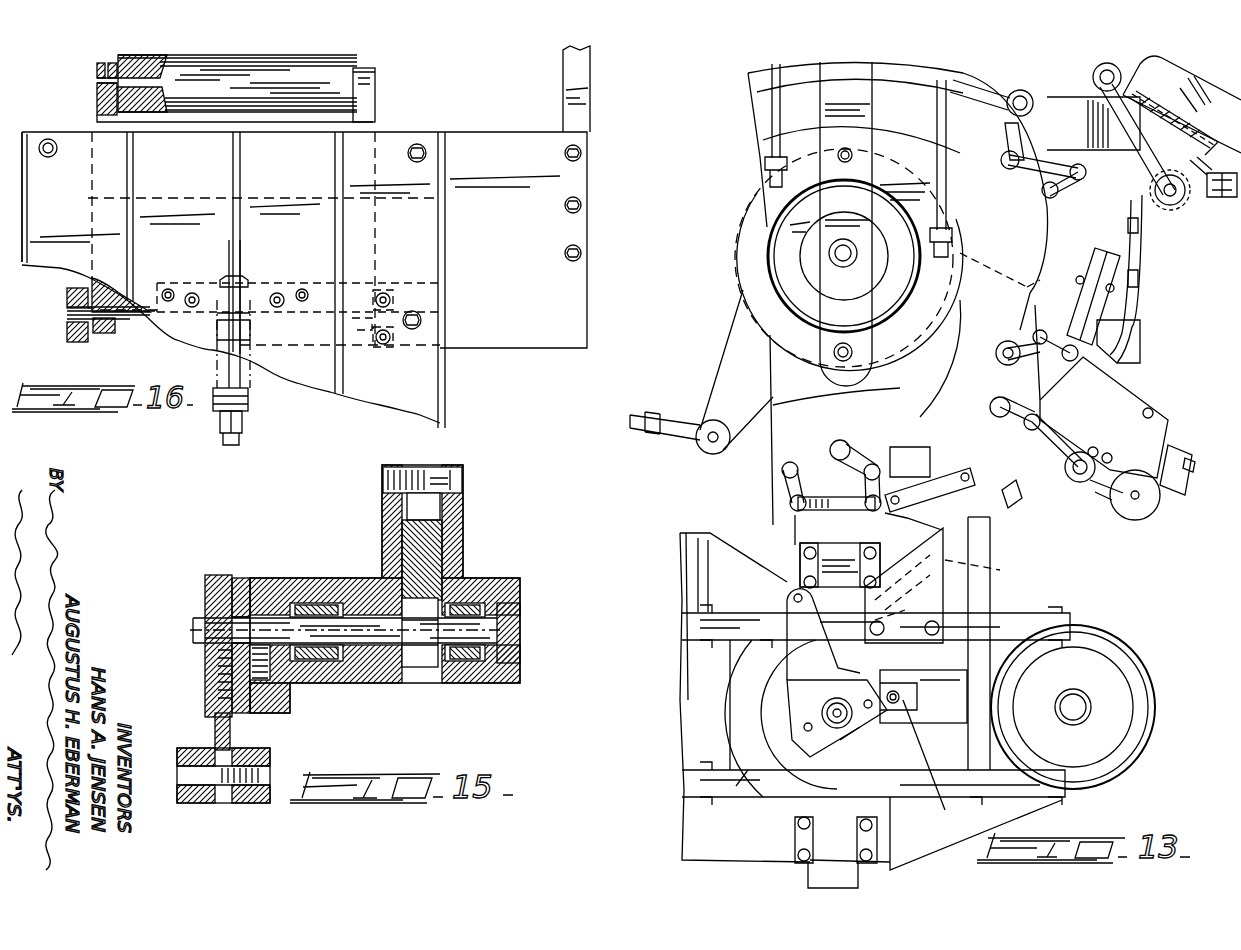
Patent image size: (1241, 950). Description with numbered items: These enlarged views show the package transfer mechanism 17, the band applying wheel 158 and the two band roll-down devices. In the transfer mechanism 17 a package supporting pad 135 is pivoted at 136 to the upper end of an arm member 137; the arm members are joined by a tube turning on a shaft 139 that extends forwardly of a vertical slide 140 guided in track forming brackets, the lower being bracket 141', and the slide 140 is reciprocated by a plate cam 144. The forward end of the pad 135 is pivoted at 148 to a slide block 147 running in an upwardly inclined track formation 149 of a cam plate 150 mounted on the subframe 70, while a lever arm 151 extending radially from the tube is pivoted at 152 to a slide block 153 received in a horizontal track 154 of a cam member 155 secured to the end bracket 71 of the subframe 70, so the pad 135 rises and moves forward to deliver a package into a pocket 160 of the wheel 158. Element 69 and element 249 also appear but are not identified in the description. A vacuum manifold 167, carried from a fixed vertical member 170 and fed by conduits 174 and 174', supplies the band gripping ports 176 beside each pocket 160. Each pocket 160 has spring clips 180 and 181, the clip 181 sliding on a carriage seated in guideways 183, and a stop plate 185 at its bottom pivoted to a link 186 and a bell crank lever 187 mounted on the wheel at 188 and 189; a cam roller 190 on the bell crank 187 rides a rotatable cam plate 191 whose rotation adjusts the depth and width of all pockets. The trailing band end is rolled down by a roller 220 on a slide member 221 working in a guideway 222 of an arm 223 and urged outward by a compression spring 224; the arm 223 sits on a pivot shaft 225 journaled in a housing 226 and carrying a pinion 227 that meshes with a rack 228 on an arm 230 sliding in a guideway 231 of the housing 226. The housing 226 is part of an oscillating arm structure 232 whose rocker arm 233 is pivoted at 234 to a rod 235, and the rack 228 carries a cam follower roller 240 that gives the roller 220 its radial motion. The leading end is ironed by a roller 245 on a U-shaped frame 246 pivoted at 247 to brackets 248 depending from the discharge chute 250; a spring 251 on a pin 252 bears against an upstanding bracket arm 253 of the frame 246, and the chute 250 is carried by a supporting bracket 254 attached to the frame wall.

In FIG. 13, the transfer mechanism 17 is at (674, 739).
In FIG. 13, the pulley hub 69 is at (1078, 700).
In FIG. 13, the subframe 70 is at (736, 786).
In FIG. 13, the end bracket 71 is at (1000, 745).
In FIG. 13, the package supporting pad 135 is at (840, 545).
In FIG. 13, the pivot 136 is at (790, 596).
In FIG. 13, the arm member 137 is at (750, 652).
In FIG. 13, the shaft 139 is at (830, 712).
In FIG. 13, the slide 140 is at (860, 806).
In FIG. 13, the lower track forming bracket 141' is at (767, 840).
In FIG. 13, the plate cam 144 is at (735, 692).
In FIG. 13, the slide block 147 is at (905, 597).
In FIG. 13, the pivot 148 is at (904, 630).
In FIG. 13, the track formation 149 is at (990, 565).
In FIG. 13, the cam plate 150 is at (970, 605).
In FIG. 13, the lever arm 151 is at (785, 695).
In FIG. 13, the pivot 152 is at (862, 732).
In FIG. 13, the slide block 153 is at (932, 758).
In FIG. 13, the track 154 is at (917, 697).
In FIG. 13, the cam member 155 is at (958, 685).
In FIG. 13, the band applying wheel 158 is at (985, 522).
In FIG. 13, the pocket 160 is at (1040, 365).
In FIG. 13, the vacuum manifold 167 is at (893, 358).
In FIG. 13, the fixed vertical member 170 is at (866, 126).
In FIG. 13, the conduit 174 is at (792, 125).
In FIG. 13, the conduit 174' is at (964, 168).
In FIG. 13, the vacuum port 176 is at (1140, 230).
In FIG. 13, the spring clip 180 is at (797, 548).
In FIG. 13, the spring clip 181 is at (1125, 370).
In FIG. 13, the guideway 183 is at (960, 485).
In FIG. 13, the stop plate 185 is at (822, 512).
In FIG. 13, the link 186 is at (782, 486).
In FIG. 13, the bell crank lever 187 is at (885, 473).
In FIG. 13, the pivot 188 is at (798, 462).
In FIG. 13, the pivot 189 is at (876, 470).
In FIG. 13, the cam roller 190 is at (845, 445).
In FIG. 13, the cam plate 191 is at (955, 410).
In FIG. 15, the ironing roller 220 is at (240, 804).
In FIG. 13, the ironing roller 220 is at (1072, 480).
In FIG. 15, the slide member 221 is at (232, 733).
In FIG. 15, the guideway 222 is at (224, 580).
In FIG. 15, the arm 223 is at (210, 650).
In FIG. 15, the compression spring 224 is at (210, 688).
In FIG. 15, the pivot shaft 225 is at (222, 618).
In FIG. 15, the housing 226 is at (388, 538).
In FIG. 13, the housing 226 is at (1125, 395).
In FIG. 15, the pinion 227 is at (425, 668).
In FIG. 15, the rack 228 is at (435, 580).
In FIG. 15, the arm 230 is at (430, 545).
In FIG. 15, the guideway 231 is at (440, 510).
In FIG. 13, the oscillating arm structure 232 is at (1028, 288).
In FIG. 13, the rocker arm 233 is at (720, 395).
In FIG. 13, the pivot 234 is at (708, 450).
In FIG. 13, the rod 235 is at (630, 430).
In FIG. 13, the cam follower roller 240 is at (938, 345).
In FIG. 16, the ironing roller 245 is at (340, 75).
In FIG. 13, the ironing roller 245 is at (1093, 74).
In FIG. 16, the U-shaped frame 246 is at (368, 118).
In FIG. 13, the U-shaped frame 246 is at (1130, 108).
In FIG. 16, the pivot 247 is at (80, 316).
In FIG. 16, the supporting bracket 248 is at (67, 294).
In FIG. 13, the supporting bracket 248 is at (1165, 202).
In FIG. 16, the plate 249 is at (500, 328).
In FIG. 16, the discharge chute 250 is at (32, 130).
In FIG. 13, the discharge chute 250 is at (1196, 80).
In FIG. 16, the spring 251 is at (222, 362).
In FIG. 13, the spring 251 is at (1193, 205).
In FIG. 16, the pin 252 is at (224, 448).
In FIG. 13, the pin 252 is at (1210, 200).
In FIG. 16, the bracket arm 253 is at (247, 300).
In FIG. 13, the bracket arm 253 is at (1200, 142).
In FIG. 16, the supporting bracket 254 is at (590, 86).
In FIG. 13, the supporting bracket 254 is at (1067, 103).